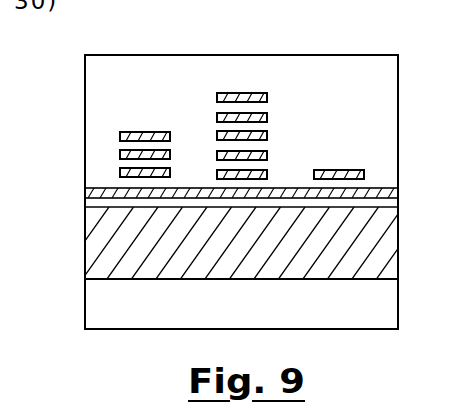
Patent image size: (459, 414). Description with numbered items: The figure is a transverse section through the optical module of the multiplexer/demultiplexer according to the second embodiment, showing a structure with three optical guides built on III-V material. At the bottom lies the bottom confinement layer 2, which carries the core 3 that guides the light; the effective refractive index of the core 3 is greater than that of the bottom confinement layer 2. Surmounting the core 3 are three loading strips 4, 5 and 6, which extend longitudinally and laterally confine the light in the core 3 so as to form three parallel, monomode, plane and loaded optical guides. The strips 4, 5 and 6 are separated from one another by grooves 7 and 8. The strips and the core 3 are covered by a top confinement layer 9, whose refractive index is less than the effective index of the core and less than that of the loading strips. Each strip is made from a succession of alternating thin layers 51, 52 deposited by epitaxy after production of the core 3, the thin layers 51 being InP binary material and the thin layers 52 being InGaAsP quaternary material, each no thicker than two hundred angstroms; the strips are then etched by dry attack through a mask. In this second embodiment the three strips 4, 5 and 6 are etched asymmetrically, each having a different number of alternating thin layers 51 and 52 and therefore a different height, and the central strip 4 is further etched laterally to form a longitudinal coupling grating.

The bottom confinement layer 2 is at (284, 315).
The core 3 is at (407, 190).
The central loading strip 4 is at (243, 90).
The loading strip 5 is at (335, 165).
The loading strip 6 is at (98, 89).
The groove 7 is at (300, 176).
The groove 8 is at (200, 176).
The top confinement layer 9 is at (204, 89).
The thin layer of InP binary material 51 is at (120, 145).
The thin layer of InGaAsP quaternary material 52 is at (120, 152).